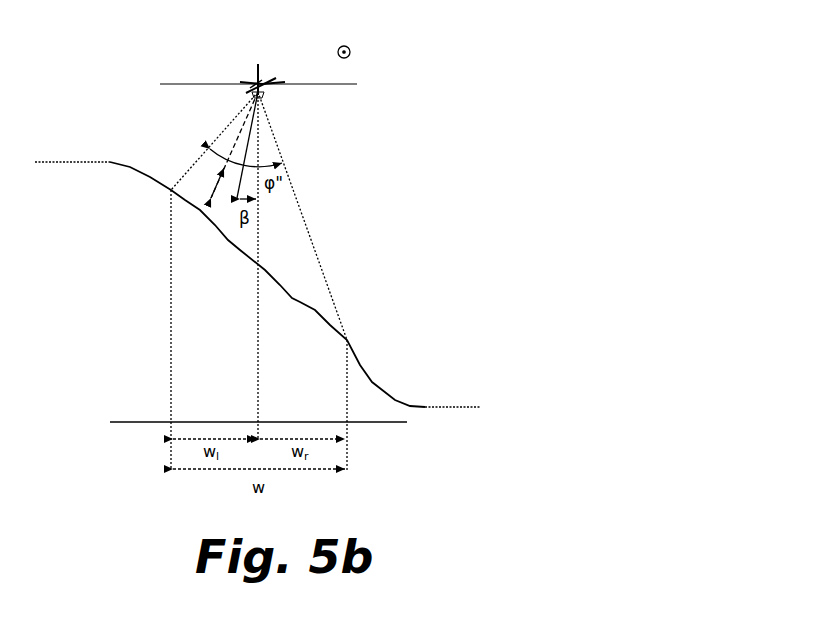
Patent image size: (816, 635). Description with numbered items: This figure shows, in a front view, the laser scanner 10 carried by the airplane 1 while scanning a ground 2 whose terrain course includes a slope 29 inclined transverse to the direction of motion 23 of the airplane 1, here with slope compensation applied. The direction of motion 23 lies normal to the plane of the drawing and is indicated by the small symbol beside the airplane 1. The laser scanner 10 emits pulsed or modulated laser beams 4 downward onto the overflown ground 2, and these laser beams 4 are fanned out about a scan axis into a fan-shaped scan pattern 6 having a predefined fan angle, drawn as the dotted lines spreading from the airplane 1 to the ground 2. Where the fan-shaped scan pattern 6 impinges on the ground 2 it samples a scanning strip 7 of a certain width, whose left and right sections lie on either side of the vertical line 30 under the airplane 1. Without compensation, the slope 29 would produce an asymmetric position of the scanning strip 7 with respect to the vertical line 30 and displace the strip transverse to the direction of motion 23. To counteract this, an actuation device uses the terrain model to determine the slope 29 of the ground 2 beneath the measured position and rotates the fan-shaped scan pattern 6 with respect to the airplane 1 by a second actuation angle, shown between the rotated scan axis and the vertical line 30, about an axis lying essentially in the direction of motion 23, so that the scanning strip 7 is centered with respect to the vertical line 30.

The airplane 1 is at (229, 62).
The ground 2 is at (96, 206).
The laser beams 4 is at (214, 190).
The fan-shaped scan pattern 6 is at (313, 237).
The scanning strip 7 is at (310, 292).
The laser scanner 10 is at (289, 100).
The direction of motion 23 is at (352, 51).
The slope 29 is at (148, 176).
The vertical line 30 is at (260, 345).